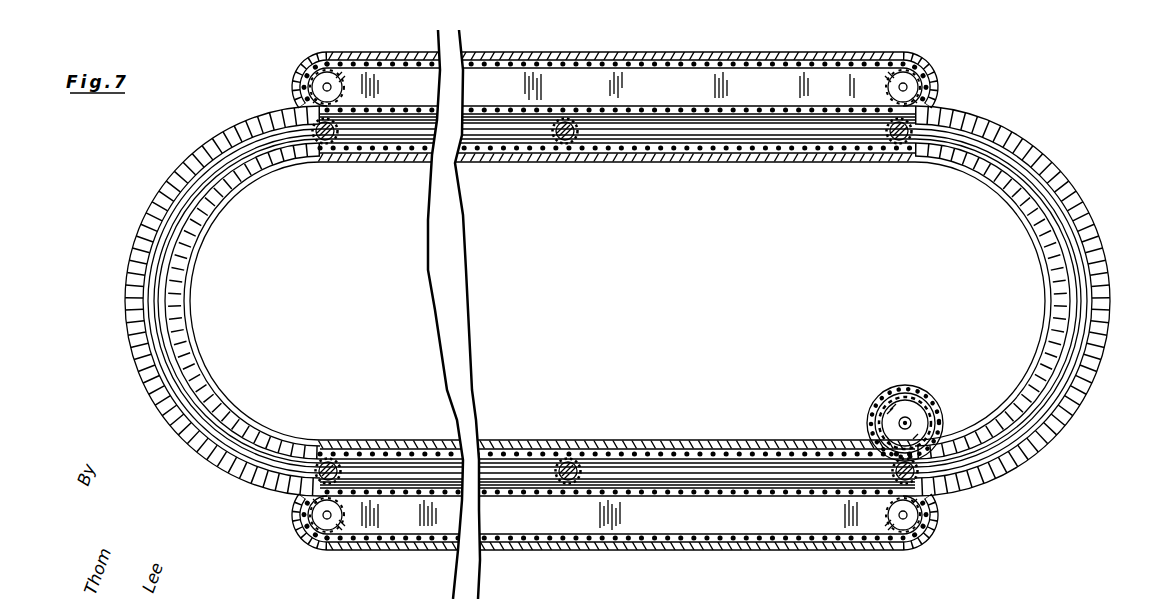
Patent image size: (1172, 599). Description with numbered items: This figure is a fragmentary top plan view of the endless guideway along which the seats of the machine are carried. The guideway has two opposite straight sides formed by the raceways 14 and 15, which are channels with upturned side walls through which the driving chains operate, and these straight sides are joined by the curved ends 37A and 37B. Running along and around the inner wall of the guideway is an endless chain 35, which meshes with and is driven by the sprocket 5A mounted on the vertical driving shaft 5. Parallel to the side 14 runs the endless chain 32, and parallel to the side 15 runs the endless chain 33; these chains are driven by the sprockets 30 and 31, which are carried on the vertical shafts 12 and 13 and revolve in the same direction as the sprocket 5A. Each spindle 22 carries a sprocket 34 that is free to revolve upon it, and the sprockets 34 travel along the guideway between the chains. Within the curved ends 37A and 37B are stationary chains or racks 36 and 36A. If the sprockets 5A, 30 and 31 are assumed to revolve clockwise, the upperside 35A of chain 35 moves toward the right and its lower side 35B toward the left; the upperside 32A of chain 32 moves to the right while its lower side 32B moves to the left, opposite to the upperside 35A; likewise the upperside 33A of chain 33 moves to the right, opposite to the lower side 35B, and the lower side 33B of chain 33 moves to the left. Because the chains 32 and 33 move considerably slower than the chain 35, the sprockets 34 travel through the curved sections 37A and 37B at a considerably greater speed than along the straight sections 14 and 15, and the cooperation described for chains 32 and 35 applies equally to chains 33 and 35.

The driving shaft 5 is at (914, 421).
The sprocket 5A is at (919, 390).
The vertical shaft 12 is at (918, 84).
The vertical shaft 13 is at (912, 540).
The raceway 14 is at (840, 132).
The raceway 15 is at (790, 467).
The spindle 22 is at (553, 493).
The sprocket 30 is at (937, 91).
The sprocket 31 is at (945, 510).
The endless chain 32 is at (833, 55).
The upperside of chain 32 32A is at (578, 66).
The lower side of chain 32 32B is at (677, 97).
The endless chain 33 is at (810, 547).
The upperside of chain 33 33A is at (604, 492).
The lower side of chain 33 33B is at (760, 535).
The sprocket 34 is at (322, 161).
The endless chain 35 is at (199, 239).
The upperside of chain 35 35A is at (626, 160).
The lower side of chain 35 35B is at (503, 449).
The stationary chain or rack 36 is at (1090, 226).
The stationary chain or rack 36A is at (143, 348).
The curved end of guideway 37A is at (1078, 307).
The curved end of guideway 37B is at (177, 380).